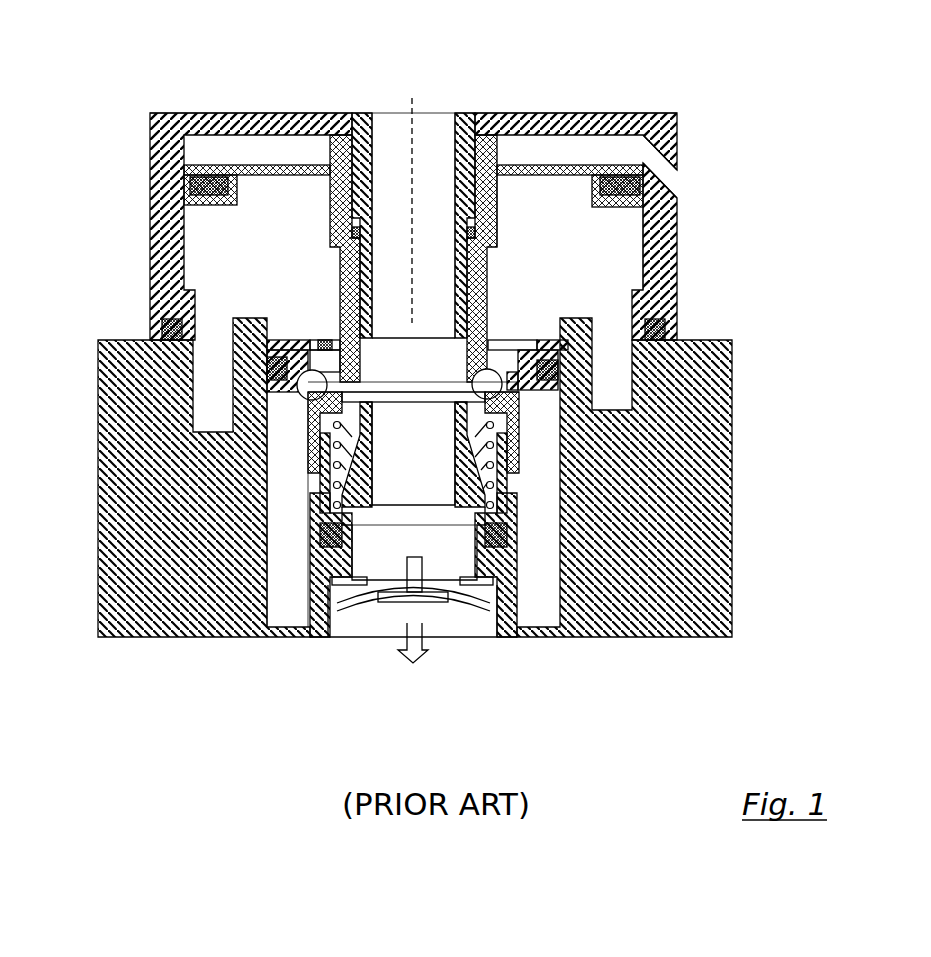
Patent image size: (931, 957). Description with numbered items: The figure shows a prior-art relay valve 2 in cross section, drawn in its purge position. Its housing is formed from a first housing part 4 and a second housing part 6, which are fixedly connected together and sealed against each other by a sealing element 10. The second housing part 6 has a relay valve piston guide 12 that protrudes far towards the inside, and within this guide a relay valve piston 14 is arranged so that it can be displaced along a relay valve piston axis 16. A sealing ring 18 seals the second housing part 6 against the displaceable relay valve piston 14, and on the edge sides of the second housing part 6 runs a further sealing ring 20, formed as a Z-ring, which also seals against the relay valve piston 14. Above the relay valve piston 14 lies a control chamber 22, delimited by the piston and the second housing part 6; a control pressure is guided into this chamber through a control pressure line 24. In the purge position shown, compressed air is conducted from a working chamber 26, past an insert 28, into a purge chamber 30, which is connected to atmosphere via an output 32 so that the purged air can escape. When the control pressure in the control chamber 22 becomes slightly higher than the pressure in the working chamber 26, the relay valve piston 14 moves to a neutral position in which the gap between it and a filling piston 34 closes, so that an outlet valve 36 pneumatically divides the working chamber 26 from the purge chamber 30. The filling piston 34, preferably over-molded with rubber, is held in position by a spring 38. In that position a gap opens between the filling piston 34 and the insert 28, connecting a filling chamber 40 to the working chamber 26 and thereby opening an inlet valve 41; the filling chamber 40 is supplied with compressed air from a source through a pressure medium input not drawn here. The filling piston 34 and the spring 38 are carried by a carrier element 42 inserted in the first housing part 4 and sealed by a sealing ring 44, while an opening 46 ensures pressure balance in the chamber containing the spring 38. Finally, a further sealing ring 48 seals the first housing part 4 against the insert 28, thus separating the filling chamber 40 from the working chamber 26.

The relay valve 2 is at (640, 63).
The first housing part 4 is at (708, 577).
The second housing part 6 is at (530, 115).
The sealing element 10 is at (162, 320).
The relay valve piston guide 12 is at (362, 143).
The relay valve piston 14 is at (348, 217).
The relay valve piston axis 16 is at (410, 147).
The sealing ring 18 is at (345, 232).
The sealing ring 20 is at (187, 188).
The control chamber 22 is at (413, 158).
The control pressure line 24 is at (678, 180).
The working chamber 26 is at (570, 232).
The insert 28 is at (562, 380).
The purge chamber 30 is at (413, 491).
The output 32 is at (433, 645).
The filling piston 34 is at (462, 410).
The outlet valve 36 is at (505, 385).
The spring 38 is at (373, 458).
The filling chamber 40 is at (287, 509).
The inlet valve 41 is at (300, 395).
The carrier element 42 is at (338, 553).
The sealing ring 44 is at (477, 537).
The opening 46 is at (308, 440).
The sealing ring 48 is at (265, 387).